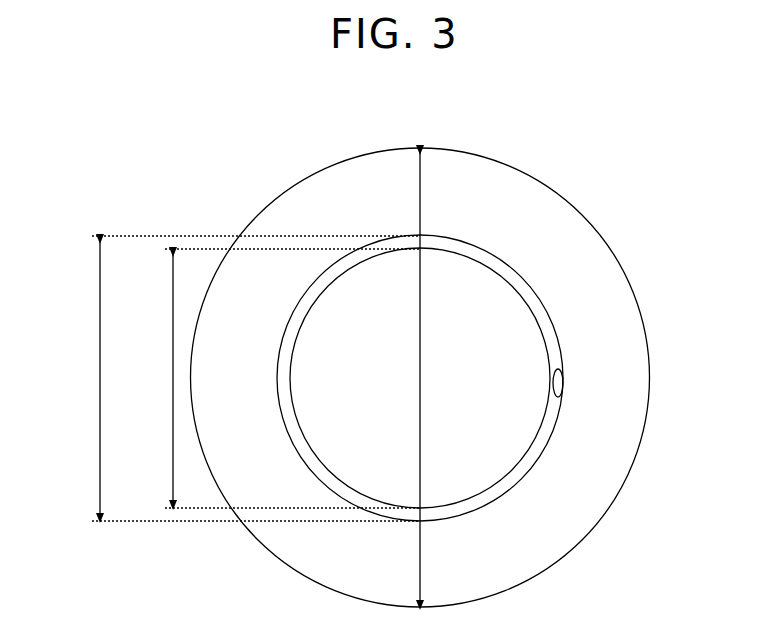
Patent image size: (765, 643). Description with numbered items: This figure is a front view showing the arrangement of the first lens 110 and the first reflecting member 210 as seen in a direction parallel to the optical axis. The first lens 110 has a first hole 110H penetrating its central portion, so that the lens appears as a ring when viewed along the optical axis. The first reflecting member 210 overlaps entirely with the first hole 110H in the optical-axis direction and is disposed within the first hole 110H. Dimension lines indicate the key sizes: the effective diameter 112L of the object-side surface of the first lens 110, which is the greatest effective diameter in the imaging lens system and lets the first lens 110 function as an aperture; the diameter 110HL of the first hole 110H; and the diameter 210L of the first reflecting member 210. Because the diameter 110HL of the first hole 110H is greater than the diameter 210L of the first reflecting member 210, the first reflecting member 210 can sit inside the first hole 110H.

The first lens 110 is at (632, 290).
The first reflecting member 210 is at (539, 327).
The first hole 110H is at (560, 368).
The effective diameter of the object-side surface 112L is at (444, 377).
The diameter of the first hole 110HL is at (226, 378).
The diameter of the first reflecting member 210L is at (269, 378).